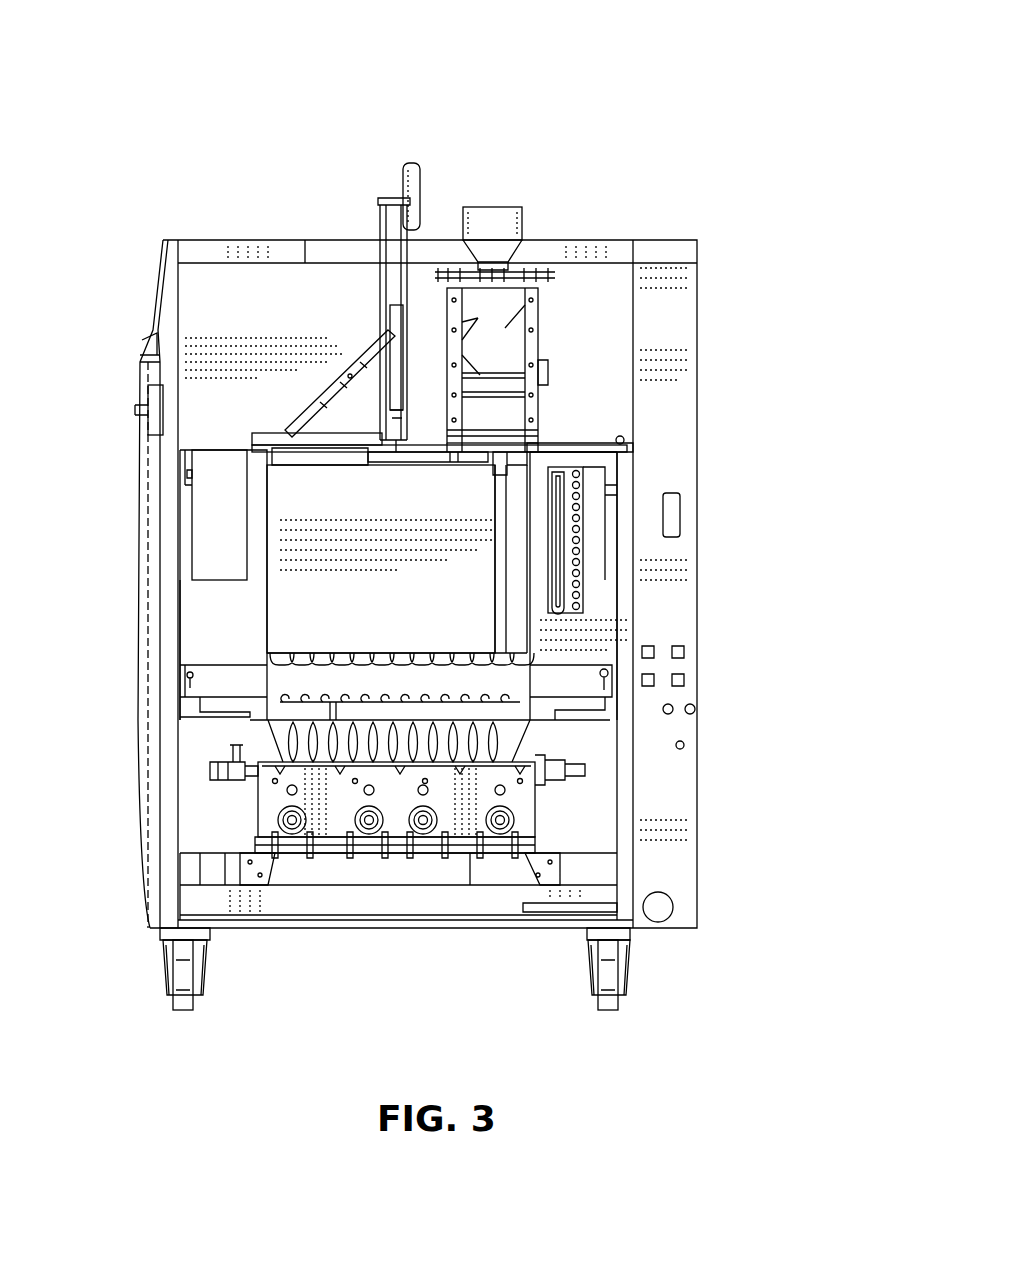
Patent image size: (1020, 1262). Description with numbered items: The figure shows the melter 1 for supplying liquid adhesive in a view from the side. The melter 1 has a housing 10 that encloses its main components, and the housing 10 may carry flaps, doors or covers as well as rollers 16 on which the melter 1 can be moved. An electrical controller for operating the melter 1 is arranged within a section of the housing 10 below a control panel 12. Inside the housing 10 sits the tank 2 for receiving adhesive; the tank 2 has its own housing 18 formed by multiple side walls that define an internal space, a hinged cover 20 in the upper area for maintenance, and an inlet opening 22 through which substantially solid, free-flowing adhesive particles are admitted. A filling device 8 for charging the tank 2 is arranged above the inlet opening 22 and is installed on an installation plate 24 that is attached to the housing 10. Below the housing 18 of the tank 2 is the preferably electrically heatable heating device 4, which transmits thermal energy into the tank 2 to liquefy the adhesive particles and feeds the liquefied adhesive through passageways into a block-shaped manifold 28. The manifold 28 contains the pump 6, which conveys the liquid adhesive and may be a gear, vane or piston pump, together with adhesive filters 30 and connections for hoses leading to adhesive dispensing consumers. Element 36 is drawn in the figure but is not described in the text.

The melter 1 is at (147, 1104).
The tank 2 is at (387, 590).
The heating device 4 is at (532, 736).
The pump 6 is at (524, 794).
The filling device 8 is at (505, 67).
The housing 10 is at (173, 171).
The control panel 12 is at (139, 329).
The rollers 16 is at (167, 983).
The housing of the tank 18 is at (262, 607).
The hinged cover 20 is at (393, 313).
The inlet opening 22 is at (515, 448).
The installation plate 24 is at (596, 439).
The manifold 28 is at (542, 805).
The adhesive filters 30 is at (423, 828).
The feed chute assembly 36 is at (540, 340).